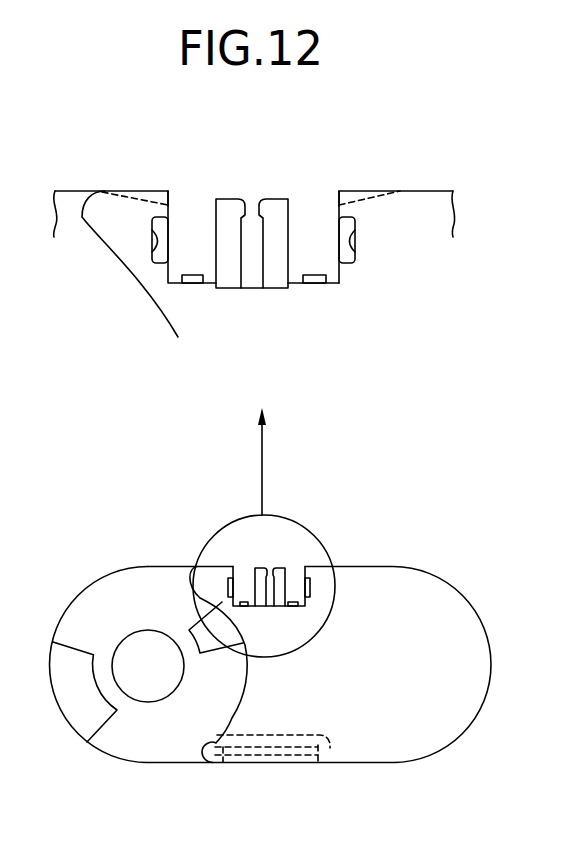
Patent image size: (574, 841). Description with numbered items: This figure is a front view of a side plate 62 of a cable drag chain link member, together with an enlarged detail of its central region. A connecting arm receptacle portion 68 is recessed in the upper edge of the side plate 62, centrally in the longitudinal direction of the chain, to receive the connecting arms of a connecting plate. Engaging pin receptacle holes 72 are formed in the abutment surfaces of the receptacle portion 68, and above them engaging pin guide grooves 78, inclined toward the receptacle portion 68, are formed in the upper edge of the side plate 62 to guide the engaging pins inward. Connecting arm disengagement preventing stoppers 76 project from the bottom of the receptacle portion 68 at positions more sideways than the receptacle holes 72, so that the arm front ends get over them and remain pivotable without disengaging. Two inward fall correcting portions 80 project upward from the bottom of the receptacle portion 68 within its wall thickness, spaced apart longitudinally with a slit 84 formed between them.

The side plate 62 is at (388, 554).
The connecting arm receptacle portion 68 is at (293, 578).
The engaging pin receptacle hole 72 is at (153, 255).
The connecting arm disengagement preventing stopper 76 is at (192, 285).
The engaging pin guide groove 78 is at (151, 197).
The inward fall correcting portion 80 is at (226, 203).
The slit 84 is at (252, 258).